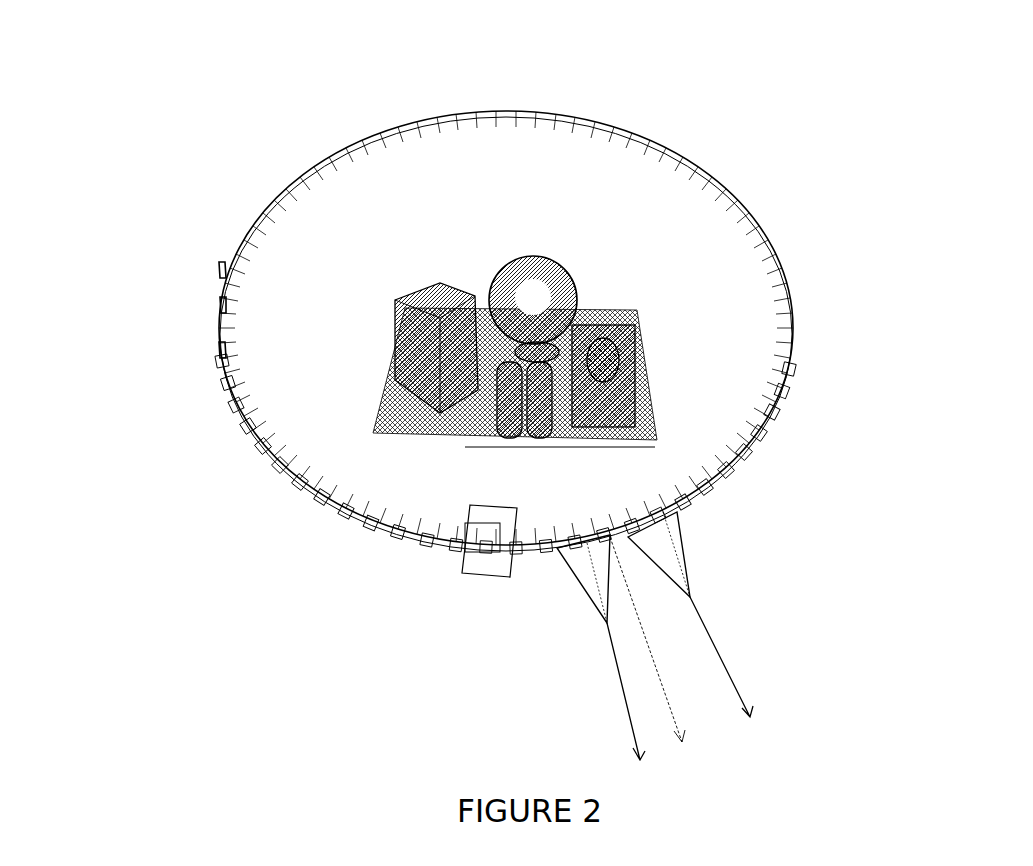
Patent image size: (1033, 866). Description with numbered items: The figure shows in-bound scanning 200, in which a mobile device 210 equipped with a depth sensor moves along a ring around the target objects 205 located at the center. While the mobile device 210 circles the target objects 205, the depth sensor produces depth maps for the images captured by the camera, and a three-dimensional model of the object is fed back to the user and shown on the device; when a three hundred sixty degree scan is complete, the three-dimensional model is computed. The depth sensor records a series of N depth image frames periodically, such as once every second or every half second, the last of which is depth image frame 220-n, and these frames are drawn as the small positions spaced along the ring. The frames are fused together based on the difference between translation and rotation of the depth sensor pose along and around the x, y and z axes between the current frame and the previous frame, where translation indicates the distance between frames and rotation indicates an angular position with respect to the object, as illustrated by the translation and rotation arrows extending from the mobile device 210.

The in-bound scanning 200 is at (272, 84).
The target objects 205 is at (416, 250).
The mobile device 210 is at (470, 573).
The depth image frame 220-n is at (220, 270).